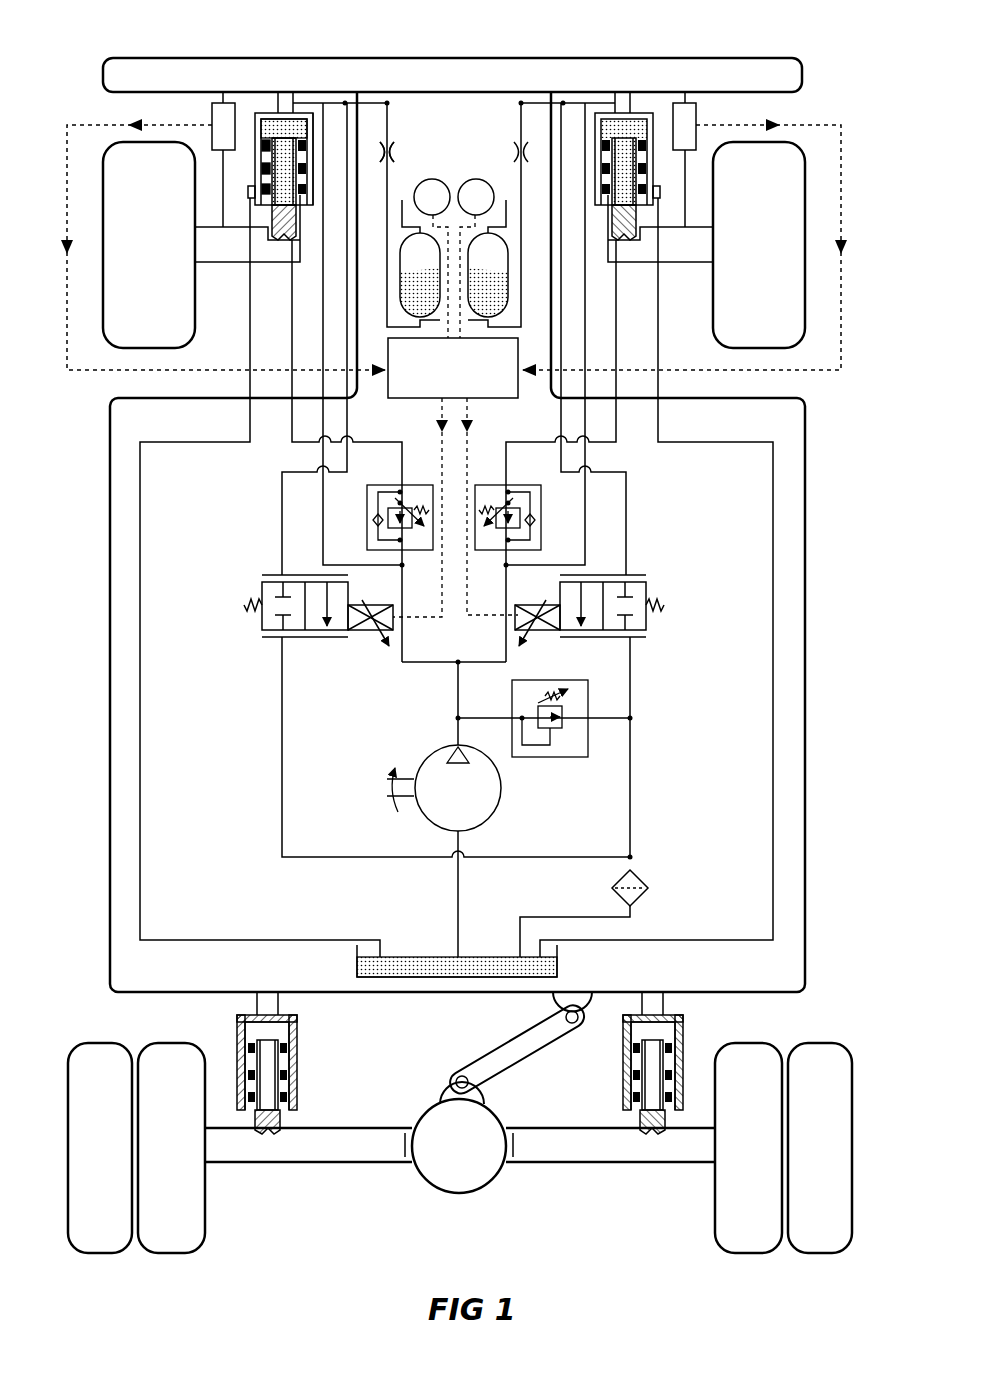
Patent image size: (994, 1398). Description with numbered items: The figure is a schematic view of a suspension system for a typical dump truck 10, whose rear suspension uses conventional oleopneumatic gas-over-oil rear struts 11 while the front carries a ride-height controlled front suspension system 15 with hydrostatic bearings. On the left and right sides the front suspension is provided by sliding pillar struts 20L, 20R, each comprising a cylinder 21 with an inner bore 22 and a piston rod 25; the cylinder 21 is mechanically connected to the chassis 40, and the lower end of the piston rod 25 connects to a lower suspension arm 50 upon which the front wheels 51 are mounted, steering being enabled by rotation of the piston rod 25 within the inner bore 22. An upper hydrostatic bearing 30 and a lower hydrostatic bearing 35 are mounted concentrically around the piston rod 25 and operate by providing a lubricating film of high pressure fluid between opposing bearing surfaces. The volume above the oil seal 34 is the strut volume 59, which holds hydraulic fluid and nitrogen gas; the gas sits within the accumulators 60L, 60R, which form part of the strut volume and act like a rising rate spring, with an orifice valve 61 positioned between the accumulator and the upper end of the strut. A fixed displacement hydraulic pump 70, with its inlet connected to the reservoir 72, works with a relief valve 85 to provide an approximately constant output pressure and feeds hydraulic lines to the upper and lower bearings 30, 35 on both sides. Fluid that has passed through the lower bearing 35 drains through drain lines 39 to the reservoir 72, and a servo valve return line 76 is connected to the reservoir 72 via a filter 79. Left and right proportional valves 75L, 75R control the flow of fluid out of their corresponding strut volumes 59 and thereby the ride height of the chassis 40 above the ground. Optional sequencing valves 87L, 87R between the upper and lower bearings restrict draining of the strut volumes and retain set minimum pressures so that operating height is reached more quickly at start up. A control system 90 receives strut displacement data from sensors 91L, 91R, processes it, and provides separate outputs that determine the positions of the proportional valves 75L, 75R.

The dump truck 10 is at (828, 675).
The rear struts 11 is at (297, 1062).
The front suspension system 15 is at (80, 392).
The left front suspension strut 20L is at (253, 107).
The right front suspension strut 20R is at (638, 117).
The cylinder 21 is at (321, 127).
The inner bore 22 is at (300, 128).
The piston rod 25 is at (275, 225).
The upper hydrostatic bearing 30 is at (263, 150).
The oil seal 34 is at (252, 188).
The lower hydrostatic bearing 35 is at (252, 198).
The drain lines 39 is at (146, 830).
The chassis 40 is at (183, 984).
The lower suspension arm 50 is at (225, 245).
The front wheels 51 is at (160, 333).
The strut volume 59 is at (268, 118).
The left accumulator 60L is at (422, 275).
The right accumulator 60R is at (487, 275).
The orifice valve 61 is at (379, 172).
The hydraulic pump 70 is at (435, 768).
The reservoir 72 is at (548, 958).
The left proportional valve 75L is at (268, 647).
The right proportional valve 75R is at (660, 647).
The servo valve return line 76 is at (286, 704).
The filter 79 is at (632, 870).
The relief valve 85 is at (602, 740).
The left sequencing valve 87L is at (340, 518).
The right sequencing valve 87R is at (568, 518).
The control system 90 is at (455, 398).
The left sensor 91L is at (220, 117).
The right sensor 91R is at (683, 118).